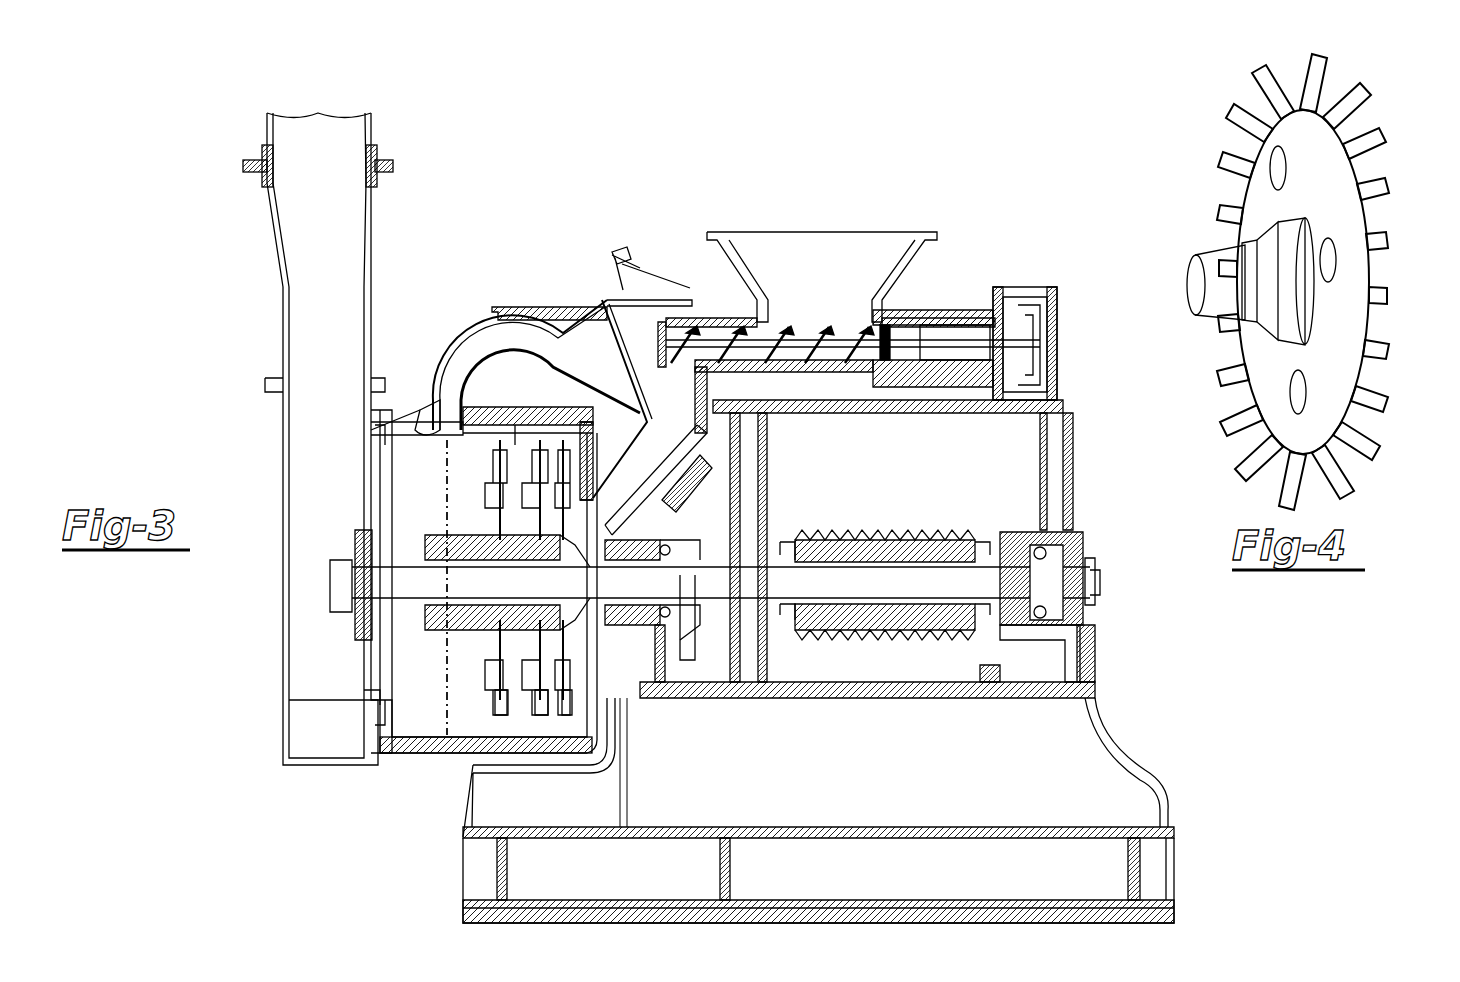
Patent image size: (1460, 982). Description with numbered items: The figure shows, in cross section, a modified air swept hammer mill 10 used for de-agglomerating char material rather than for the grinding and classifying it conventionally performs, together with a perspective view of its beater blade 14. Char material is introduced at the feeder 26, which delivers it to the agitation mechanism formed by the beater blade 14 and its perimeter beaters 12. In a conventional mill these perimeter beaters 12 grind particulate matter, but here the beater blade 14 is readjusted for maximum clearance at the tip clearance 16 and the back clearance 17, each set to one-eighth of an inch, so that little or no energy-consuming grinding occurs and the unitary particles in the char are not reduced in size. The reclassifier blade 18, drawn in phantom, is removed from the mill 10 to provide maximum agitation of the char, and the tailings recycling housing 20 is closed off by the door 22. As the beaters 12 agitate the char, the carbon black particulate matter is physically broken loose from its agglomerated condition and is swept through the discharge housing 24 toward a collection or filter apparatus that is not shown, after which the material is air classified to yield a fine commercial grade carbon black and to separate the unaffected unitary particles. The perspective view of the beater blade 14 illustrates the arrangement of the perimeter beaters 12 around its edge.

In FIG. 3, the modified air swept hammer mill 10 is at (548, 212).
In FIG. 3, the perimeter beaters 12 is at (566, 690).
In FIG. 4, the perimeter beaters 12 is at (1353, 133).
In FIG. 3, the beater blade 14 is at (510, 520).
In FIG. 4, the beater blade 14 is at (1267, 357).
In FIG. 3, the tip clearance 16 is at (553, 443).
In FIG. 3, the back clearance 17 is at (577, 475).
In FIG. 3, the reclassifier blade 18 is at (447, 490).
In FIG. 3, the tailings recycling housing 20 is at (525, 340).
In FIG. 3, the door 22 is at (404, 420).
In FIG. 3, the discharge housing 24 is at (303, 337).
In FIG. 3, the feeder 26 is at (795, 258).